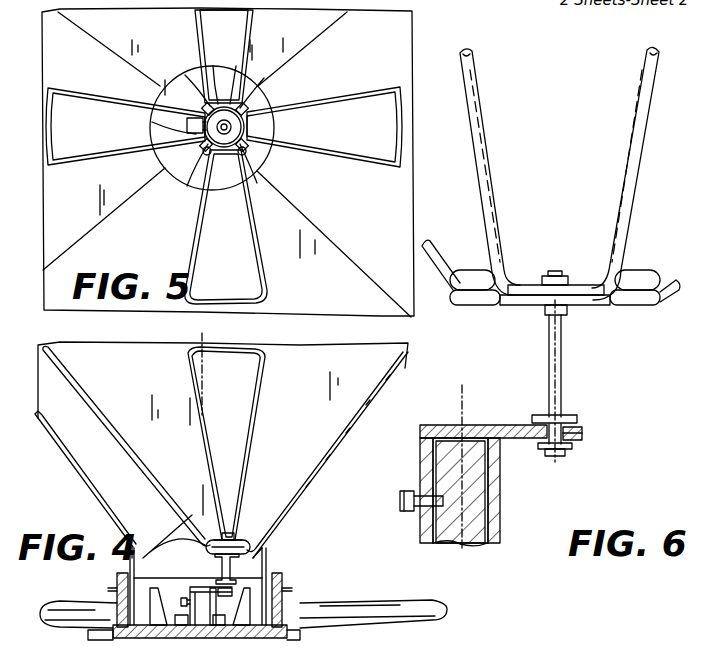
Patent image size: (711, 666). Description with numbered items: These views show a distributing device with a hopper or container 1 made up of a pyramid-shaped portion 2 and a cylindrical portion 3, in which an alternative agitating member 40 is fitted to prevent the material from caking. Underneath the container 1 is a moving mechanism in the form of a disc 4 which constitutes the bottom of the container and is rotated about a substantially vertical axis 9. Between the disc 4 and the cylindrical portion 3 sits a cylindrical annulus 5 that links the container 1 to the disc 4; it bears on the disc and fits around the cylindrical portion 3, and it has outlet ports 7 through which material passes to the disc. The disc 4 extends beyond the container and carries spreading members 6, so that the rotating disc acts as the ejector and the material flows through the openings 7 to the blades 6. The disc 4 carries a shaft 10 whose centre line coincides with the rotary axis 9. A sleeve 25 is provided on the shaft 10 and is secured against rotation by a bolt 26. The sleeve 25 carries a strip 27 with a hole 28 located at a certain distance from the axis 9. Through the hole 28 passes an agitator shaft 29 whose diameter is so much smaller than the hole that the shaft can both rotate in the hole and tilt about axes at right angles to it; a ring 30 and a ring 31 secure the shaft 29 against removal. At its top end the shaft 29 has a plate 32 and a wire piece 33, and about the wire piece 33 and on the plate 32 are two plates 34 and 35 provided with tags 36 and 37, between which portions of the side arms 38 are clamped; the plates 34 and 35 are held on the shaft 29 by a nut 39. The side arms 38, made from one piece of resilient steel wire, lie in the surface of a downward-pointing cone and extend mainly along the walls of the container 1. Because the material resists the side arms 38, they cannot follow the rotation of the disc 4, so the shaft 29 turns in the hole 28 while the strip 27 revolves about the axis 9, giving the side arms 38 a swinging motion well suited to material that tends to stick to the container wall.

In FIG. 5, the hopper or container 1 is at (410, 132).
In FIG. 4, the hopper or container 1 is at (76, 483).
In FIG. 6, the hopper or container 1 is at (432, 135).
In FIG. 4, the pyramid-shaped portion 2 is at (290, 505).
In FIG. 5, the cylindrical portion 3 is at (166, 149).
In FIG. 4, the cylindrical portion 3 is at (270, 560).
In FIG. 4, the disc 4 is at (142, 638).
In FIG. 4, the cylindrical annulus 5 is at (106, 594).
In FIG. 4, the spreading members 6 is at (70, 635).
In FIG. 4, the outlet ports 7 is at (151, 600).
In FIG. 4, the vertical axis 9 is at (204, 394).
In FIG. 6, the vertical axis 9 is at (460, 388).
In FIG. 4, the shaft 10 is at (209, 608).
In FIG. 6, the shaft 10 is at (472, 546).
In FIG. 6, the sleeve 25 is at (496, 540).
In FIG. 4, the bolt 26 is at (185, 600).
In FIG. 6, the bolt 26 is at (405, 500).
In FIG. 5, the strip 27 is at (187, 126).
In FIG. 4, the strip 27 is at (210, 580).
In FIG. 6, the strip 27 is at (494, 427).
In FIG. 6, the hole 28 is at (583, 432).
In FIG. 4, the agitator shaft 29 is at (238, 568).
In FIG. 6, the agitator shaft 29 is at (562, 363).
In FIG. 6, the ring 30 is at (538, 416).
In FIG. 6, the ring 31 is at (566, 452).
In FIG. 6, the plate 32 is at (546, 312).
In FIG. 6, the wire piece 33 is at (574, 284).
In FIG. 6, the plate 34 is at (513, 304).
In FIG. 6, the plate 35 is at (514, 285).
In FIG. 6, the tags 36 is at (472, 300).
In FIG. 5, the tags 37 is at (207, 108).
In FIG. 6, the tags 37 is at (480, 270).
In FIG. 5, the side arms 38 is at (250, 66).
In FIG. 4, the side arms 38 is at (80, 388).
In FIG. 6, the side arms 38 is at (478, 108).
In FIG. 5, the nut 39 is at (244, 128).
In FIG. 4, the nut 39 is at (227, 540).
In FIG. 6, the nut 39 is at (549, 272).
In FIG. 5, the agitating member 40 is at (381, 175).
In FIG. 4, the agitating member 40 is at (268, 480).
In FIG. 6, the agitating member 40 is at (498, 173).